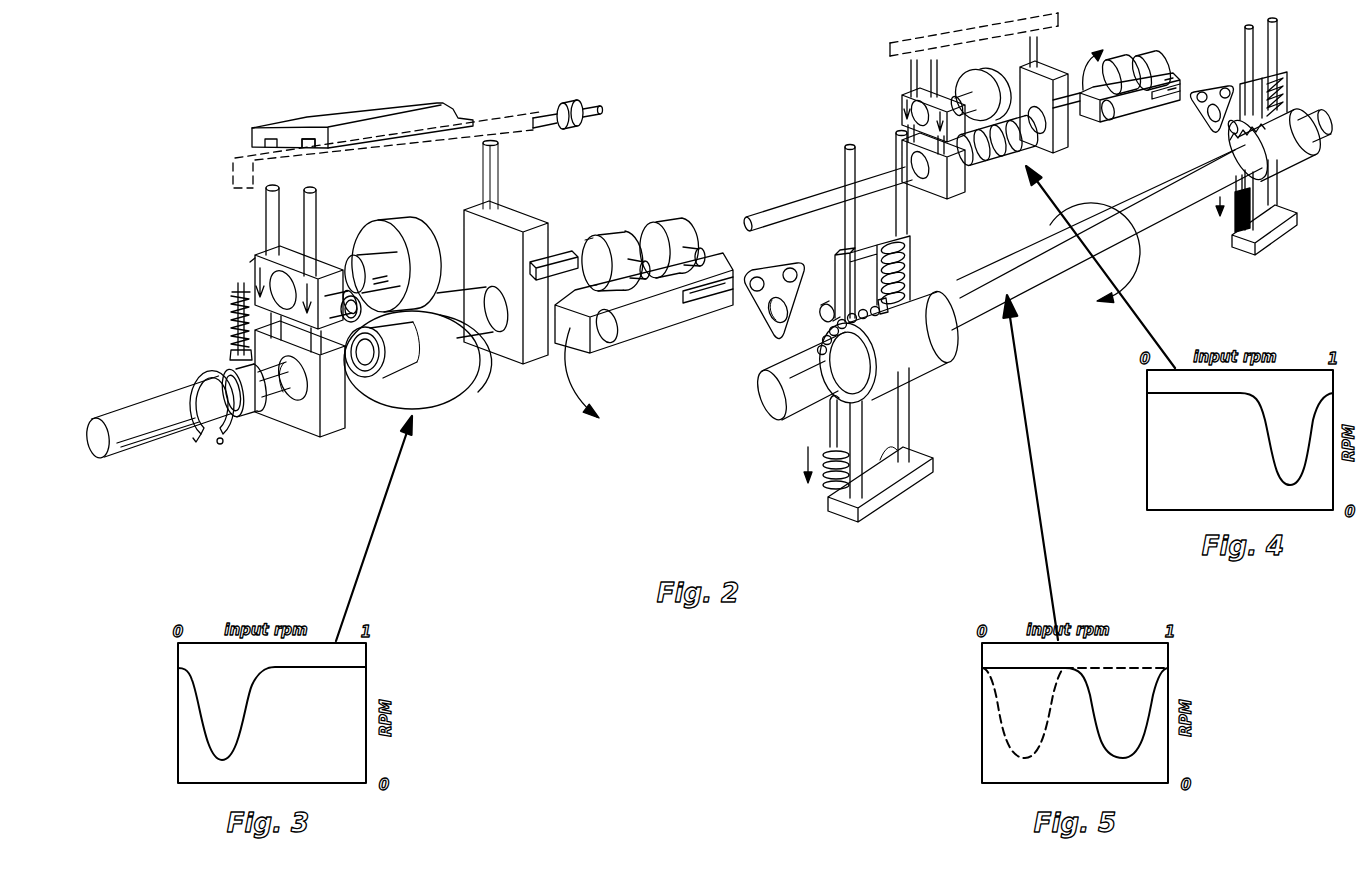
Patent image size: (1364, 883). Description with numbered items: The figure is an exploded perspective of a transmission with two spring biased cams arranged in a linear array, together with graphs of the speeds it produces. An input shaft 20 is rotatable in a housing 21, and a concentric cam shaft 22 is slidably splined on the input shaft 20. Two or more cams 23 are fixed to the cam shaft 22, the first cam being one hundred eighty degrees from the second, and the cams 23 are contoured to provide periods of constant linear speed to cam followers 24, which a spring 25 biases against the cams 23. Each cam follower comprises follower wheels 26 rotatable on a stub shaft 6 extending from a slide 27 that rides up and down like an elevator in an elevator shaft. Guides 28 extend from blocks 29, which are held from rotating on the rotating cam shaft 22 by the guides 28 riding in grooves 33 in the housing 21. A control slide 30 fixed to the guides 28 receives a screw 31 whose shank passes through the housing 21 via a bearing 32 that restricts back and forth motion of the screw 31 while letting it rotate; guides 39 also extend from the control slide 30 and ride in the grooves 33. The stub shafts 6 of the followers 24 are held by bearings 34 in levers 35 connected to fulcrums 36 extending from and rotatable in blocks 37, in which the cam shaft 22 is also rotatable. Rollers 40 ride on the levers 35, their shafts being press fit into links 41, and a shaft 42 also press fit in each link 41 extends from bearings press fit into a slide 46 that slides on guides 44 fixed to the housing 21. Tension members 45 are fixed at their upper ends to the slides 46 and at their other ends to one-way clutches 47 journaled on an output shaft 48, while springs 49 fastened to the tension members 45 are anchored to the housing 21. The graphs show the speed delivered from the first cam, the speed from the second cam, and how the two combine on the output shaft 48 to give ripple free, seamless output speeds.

The stub shaft 6 is at (338, 285).
The input shaft 20 is at (142, 414).
The housing 21 is at (407, 106).
The cam shaft 22 is at (462, 390).
The cams 23 is at (440, 405).
The cam followers 24 is at (253, 272).
The spring 25 is at (236, 316).
The follower wheels 26 is at (390, 238).
The slide 27 is at (253, 260).
The guides 28 is at (268, 202).
The blocks 29 is at (300, 437).
The control slide 30 is at (252, 158).
The screw 31 is at (545, 112).
The bearing 32 is at (308, 138).
The grooves 33 is at (570, 100).
The bearings 34 is at (600, 345).
The levers 35 is at (650, 335).
The fulcrums 36 is at (596, 236).
The blocks 37 is at (530, 223).
The guides 39 is at (500, 180).
The rollers 40 is at (660, 223).
The links 41 is at (775, 290).
The shaft 42 is at (826, 323).
The guides 44 is at (866, 430).
The tension members 45 is at (908, 287).
The slide 46 is at (912, 250).
The one-way clutches 47 is at (920, 355).
The output shaft 48 is at (1045, 282).
The springs 49 is at (835, 476).